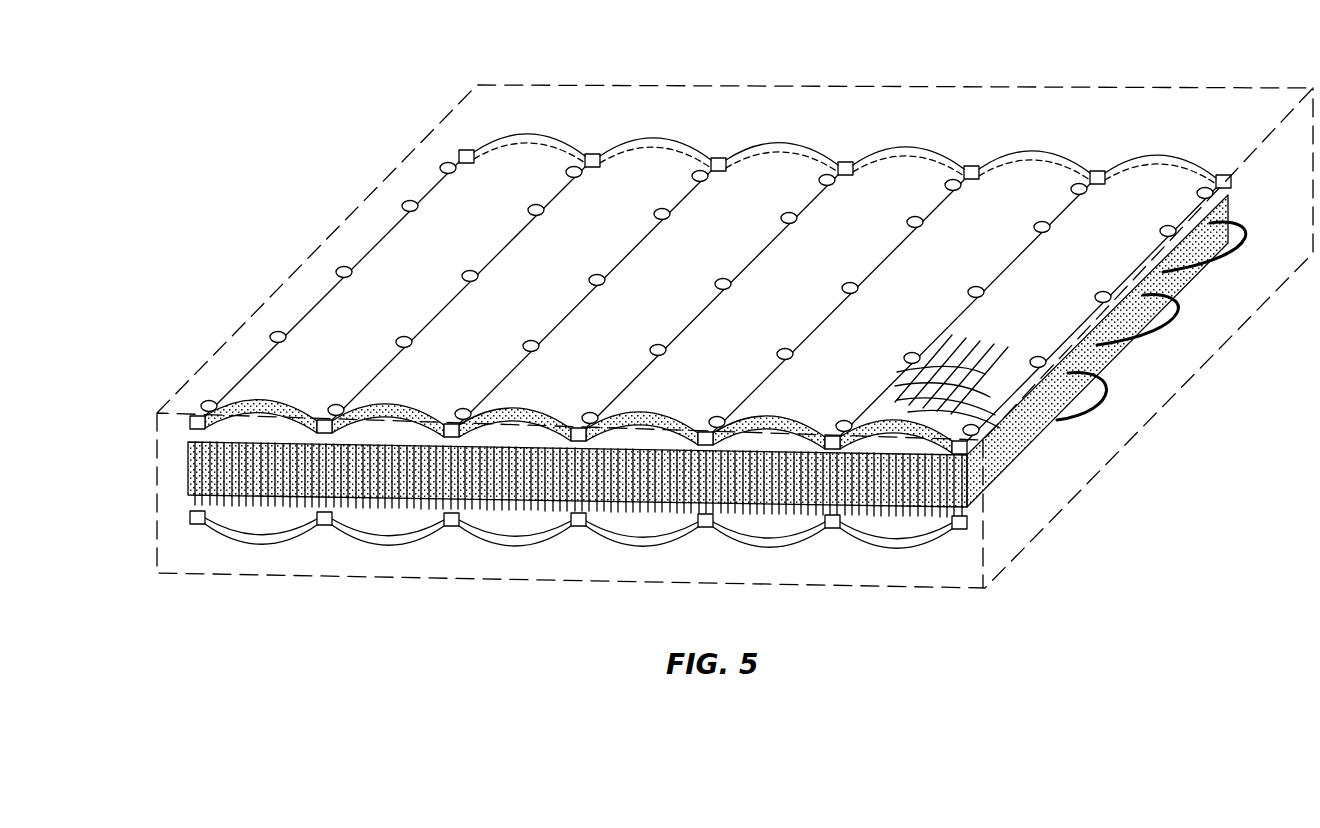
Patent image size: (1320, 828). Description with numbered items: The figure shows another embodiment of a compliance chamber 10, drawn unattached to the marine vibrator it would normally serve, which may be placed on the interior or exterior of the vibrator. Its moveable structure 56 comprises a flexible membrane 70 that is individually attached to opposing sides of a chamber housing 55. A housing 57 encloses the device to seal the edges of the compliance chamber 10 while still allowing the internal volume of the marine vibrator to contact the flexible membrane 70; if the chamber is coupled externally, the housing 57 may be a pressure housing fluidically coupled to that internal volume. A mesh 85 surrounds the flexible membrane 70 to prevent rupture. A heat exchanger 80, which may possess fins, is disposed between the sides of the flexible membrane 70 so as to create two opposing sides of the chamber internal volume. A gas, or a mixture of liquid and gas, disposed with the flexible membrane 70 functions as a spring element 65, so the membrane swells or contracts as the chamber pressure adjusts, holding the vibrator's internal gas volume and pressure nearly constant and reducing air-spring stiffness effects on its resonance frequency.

The compliance chamber 10 is at (337, 190).
The chamber housing 55 is at (1097, 360).
The moveable structure 56 is at (1160, 177).
The housing 57 is at (157, 515).
The spring element 65 is at (633, 524).
The flexible membrane 70 is at (927, 443).
The heat exchanger 80 is at (188, 467).
The mesh 85 is at (905, 400).